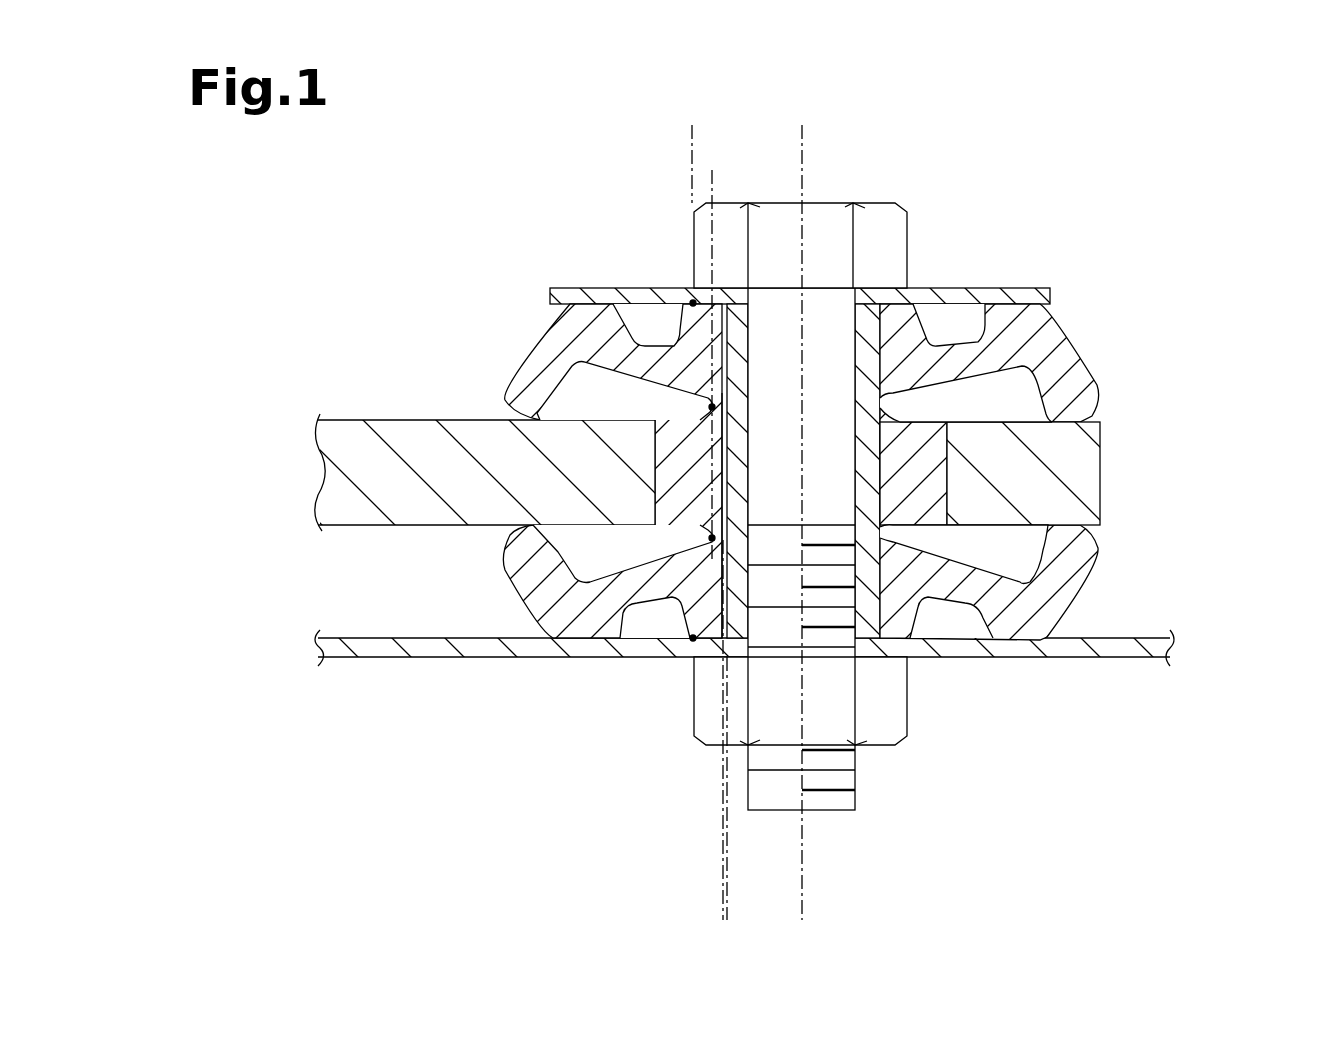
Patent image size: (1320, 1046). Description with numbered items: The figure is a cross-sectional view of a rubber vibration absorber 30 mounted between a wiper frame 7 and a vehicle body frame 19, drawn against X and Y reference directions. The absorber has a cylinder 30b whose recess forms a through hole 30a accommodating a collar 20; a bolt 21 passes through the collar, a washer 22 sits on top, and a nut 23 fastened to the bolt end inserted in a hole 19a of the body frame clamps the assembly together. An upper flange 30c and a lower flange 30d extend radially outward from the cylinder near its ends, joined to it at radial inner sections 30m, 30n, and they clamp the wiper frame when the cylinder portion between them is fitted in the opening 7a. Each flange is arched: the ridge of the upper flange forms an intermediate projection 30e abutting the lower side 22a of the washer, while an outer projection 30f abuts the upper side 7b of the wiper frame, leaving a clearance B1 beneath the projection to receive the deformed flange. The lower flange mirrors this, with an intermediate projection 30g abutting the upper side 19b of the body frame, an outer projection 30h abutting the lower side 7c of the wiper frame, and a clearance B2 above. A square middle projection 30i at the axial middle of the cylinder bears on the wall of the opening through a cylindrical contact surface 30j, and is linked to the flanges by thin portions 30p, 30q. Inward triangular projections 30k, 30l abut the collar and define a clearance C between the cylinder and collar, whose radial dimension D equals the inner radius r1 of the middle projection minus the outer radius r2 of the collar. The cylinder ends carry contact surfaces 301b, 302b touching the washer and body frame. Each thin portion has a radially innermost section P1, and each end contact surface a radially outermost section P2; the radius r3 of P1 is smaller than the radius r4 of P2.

The wiper frame 7 is at (335, 420).
The opening 7a is at (663, 450).
The upper side of the wiper frame 7b is at (1050, 393).
The lower side of the wiper frame 7c is at (1050, 548).
The vehicle body frame 19 is at (365, 643).
The hole 19a is at (880, 736).
The upper side of the body frame 19b is at (1083, 638).
The collar 20 is at (738, 300).
The bolt 21 is at (822, 215).
The washer 22 is at (980, 293).
The lower side of the washer 22a is at (998, 300).
The nut 23 is at (858, 792).
The vibration absorber 30 is at (632, 332).
The through hole 30a is at (877, 310).
The cylinder 30b is at (917, 300).
The upper flange 30c is at (1068, 332).
The lower flange 30d is at (1072, 593).
The intermediate projection 30e is at (548, 294).
The outer projection 30f is at (508, 413).
The intermediate projection 30g is at (540, 633).
The outer projection 30h is at (500, 527).
The middle projection 30i is at (945, 455).
The contact surface 30j is at (665, 585).
The projection 30k is at (790, 358).
The projection 30l is at (740, 543).
The radial inner section 30m is at (647, 325).
The radial inner section 30n is at (643, 640).
The thin portion 30p is at (887, 407).
The thin portion 30q is at (893, 540).
The contact surface 301b is at (897, 302).
The contact surface 302b is at (880, 645).
The clearance B1 is at (623, 409).
The clearance B2 is at (608, 564).
The clearance C is at (722, 456).
The radial dimension D is at (755, 902).
The section P1 is at (712, 408).
The section P2 is at (693, 303).
The inner radius r1 is at (802, 868).
The outer radius r2 is at (802, 838).
The radius r3 is at (802, 190).
The radius r4 is at (802, 152).
The X direction X is at (1178, 475).
The Y direction Y is at (1221, 520).